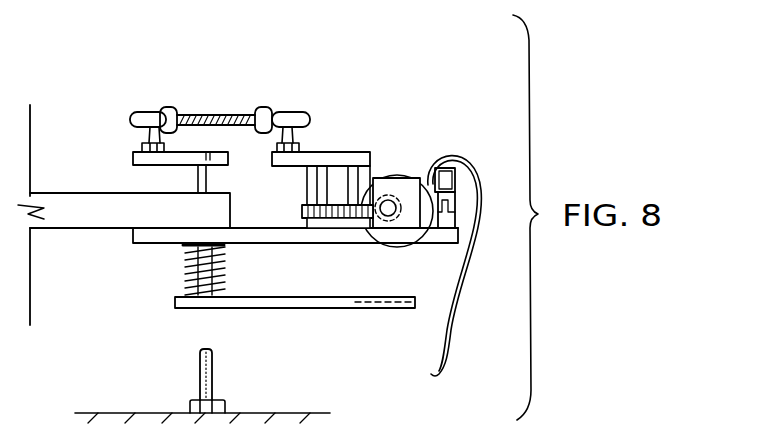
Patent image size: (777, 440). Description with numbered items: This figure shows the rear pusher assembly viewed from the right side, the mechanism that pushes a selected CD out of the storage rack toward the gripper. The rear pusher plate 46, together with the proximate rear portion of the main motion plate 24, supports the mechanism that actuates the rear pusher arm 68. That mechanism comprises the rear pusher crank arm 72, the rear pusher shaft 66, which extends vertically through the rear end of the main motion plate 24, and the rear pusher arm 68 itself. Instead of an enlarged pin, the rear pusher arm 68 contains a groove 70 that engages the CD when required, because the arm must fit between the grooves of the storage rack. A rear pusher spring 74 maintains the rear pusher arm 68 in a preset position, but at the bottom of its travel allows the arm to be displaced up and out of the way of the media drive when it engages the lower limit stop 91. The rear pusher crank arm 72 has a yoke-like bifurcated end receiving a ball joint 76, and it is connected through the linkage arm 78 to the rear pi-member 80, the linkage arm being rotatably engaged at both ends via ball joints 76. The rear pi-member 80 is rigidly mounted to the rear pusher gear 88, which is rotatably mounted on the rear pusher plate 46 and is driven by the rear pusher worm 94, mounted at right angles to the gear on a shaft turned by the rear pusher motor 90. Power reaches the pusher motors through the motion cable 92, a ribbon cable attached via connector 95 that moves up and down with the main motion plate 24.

The main motion plate 24 is at (94, 229).
The rear pusher plate 46 is at (265, 245).
The rear pusher shaft 66 is at (210, 181).
The rear pusher arm 68 is at (289, 310).
The groove 70 is at (393, 304).
The rear pusher crank arm 72 is at (174, 166).
The rear pusher spring 74 is at (184, 281).
The ball joint 76 is at (140, 129).
The linkage arm 78 is at (219, 112).
The rear pi-member 80 is at (362, 150).
The rear pusher gear 88 is at (338, 231).
The rear pusher motor 90 is at (397, 226).
The lower limit stop 91 is at (199, 382).
The motion cable 92 is at (452, 311).
The rear pusher worm 94 is at (391, 196).
The connector 95 is at (458, 195).